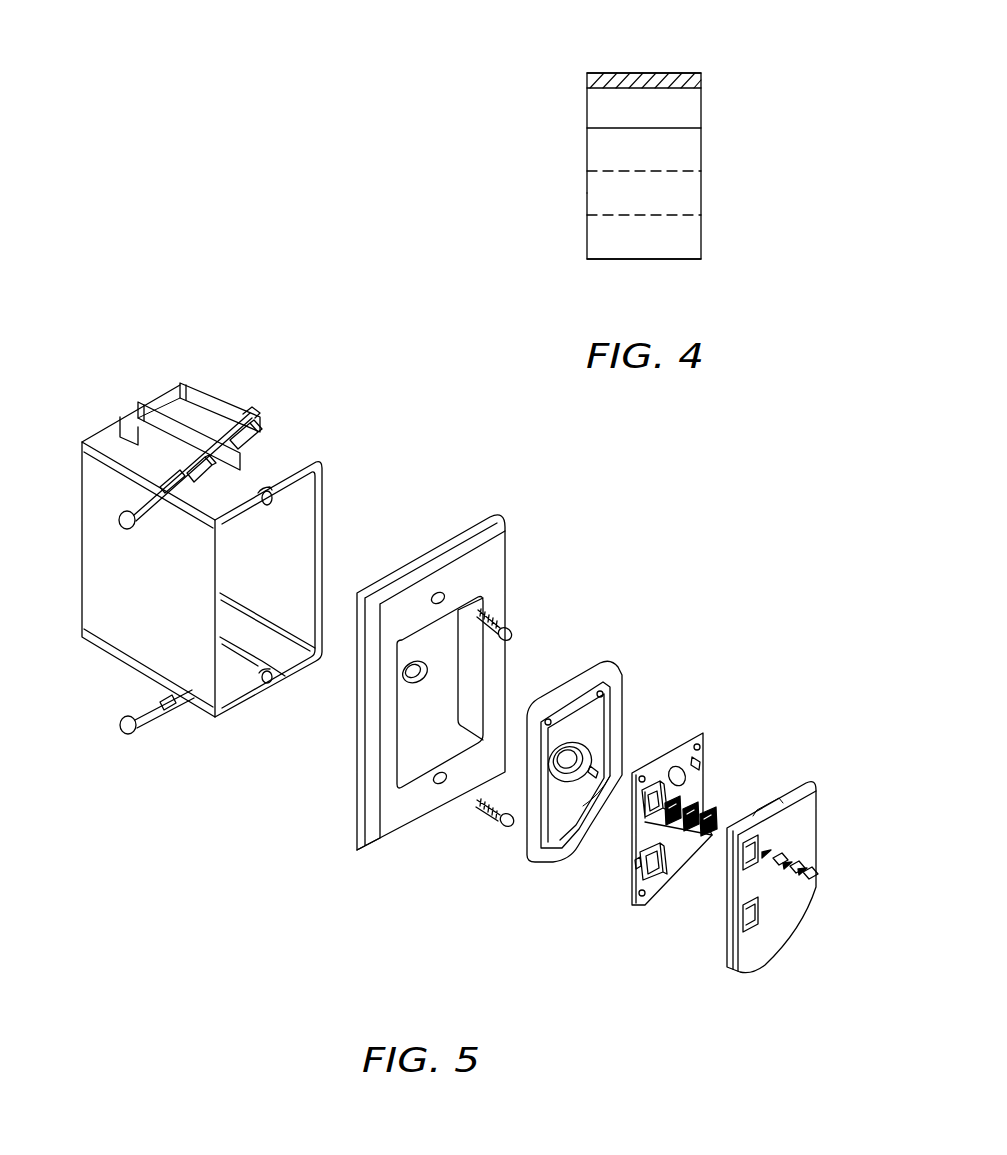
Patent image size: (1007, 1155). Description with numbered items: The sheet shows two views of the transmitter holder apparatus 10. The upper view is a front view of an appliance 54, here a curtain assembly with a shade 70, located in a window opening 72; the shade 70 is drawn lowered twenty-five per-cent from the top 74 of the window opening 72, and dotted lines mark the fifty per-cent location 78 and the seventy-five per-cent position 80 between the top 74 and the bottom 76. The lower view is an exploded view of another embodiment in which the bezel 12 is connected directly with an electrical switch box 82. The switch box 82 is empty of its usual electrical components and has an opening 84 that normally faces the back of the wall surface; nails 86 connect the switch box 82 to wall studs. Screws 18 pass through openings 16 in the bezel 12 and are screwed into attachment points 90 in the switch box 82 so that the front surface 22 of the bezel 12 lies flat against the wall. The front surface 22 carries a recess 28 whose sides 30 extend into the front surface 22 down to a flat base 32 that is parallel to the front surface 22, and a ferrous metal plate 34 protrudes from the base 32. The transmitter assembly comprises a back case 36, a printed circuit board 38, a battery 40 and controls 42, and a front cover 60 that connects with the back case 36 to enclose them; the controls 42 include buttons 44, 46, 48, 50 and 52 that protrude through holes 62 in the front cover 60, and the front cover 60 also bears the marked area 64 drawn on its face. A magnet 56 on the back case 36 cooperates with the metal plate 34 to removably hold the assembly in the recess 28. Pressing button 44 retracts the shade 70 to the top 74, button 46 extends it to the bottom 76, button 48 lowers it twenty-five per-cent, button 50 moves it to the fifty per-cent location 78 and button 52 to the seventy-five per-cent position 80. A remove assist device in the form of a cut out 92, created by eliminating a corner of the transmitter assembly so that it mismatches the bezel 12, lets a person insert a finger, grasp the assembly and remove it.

In FIG. 5, the transmitter holder apparatus 10 is at (147, 917).
In FIG. 5, the bezel 12 is at (468, 560).
In FIG. 5, the openings 16 is at (448, 597).
In FIG. 5, the screws 18 is at (513, 633).
In FIG. 5, the front surface 22 is at (387, 810).
In FIG. 5, the recess 28 is at (446, 690).
In FIG. 5, the sides 30 is at (470, 612).
In FIG. 5, the base 32 is at (405, 728).
In FIG. 5, the metal plate 34 is at (407, 675).
In FIG. 5, the back case 36 is at (530, 838).
In FIG. 5, the printed circuit board 38 is at (665, 890).
In FIG. 5, the battery 40 is at (681, 766).
In FIG. 5, the controls 42 is at (708, 820).
In FIG. 5, the button 44 is at (652, 790).
In FIG. 5, the button 46 is at (652, 881).
In FIG. 5, the button 48 is at (676, 803).
In FIG. 5, the button 50 is at (697, 808).
In FIG. 5, the button 52 is at (711, 832).
In FIG. 4, the appliance 54 is at (633, 73).
In FIG. 5, the magnet 56 is at (576, 755).
In FIG. 5, the front cover 60 is at (747, 962).
In FIG. 5, the holes 62 is at (810, 870).
In FIG. 5, the label area 64 is at (772, 920).
In FIG. 4, the shade 70 is at (693, 112).
In FIG. 4, the window opening 72 is at (684, 190).
In FIG. 4, the top 74 is at (587, 80).
In FIG. 4, the bottom 76 is at (701, 258).
In FIG. 4, the fifty per-cent location 78 is at (687, 171).
In FIG. 4, the seventy-five per-cent position 80 is at (686, 215).
In FIG. 5, the electrical switch box 82 is at (215, 407).
In FIG. 5, the opening 84 is at (303, 487).
In FIG. 5, the nails 86 is at (120, 514).
In FIG. 5, the attachment points 90 is at (271, 489).
In FIG. 5, the cut out 92 is at (813, 930).